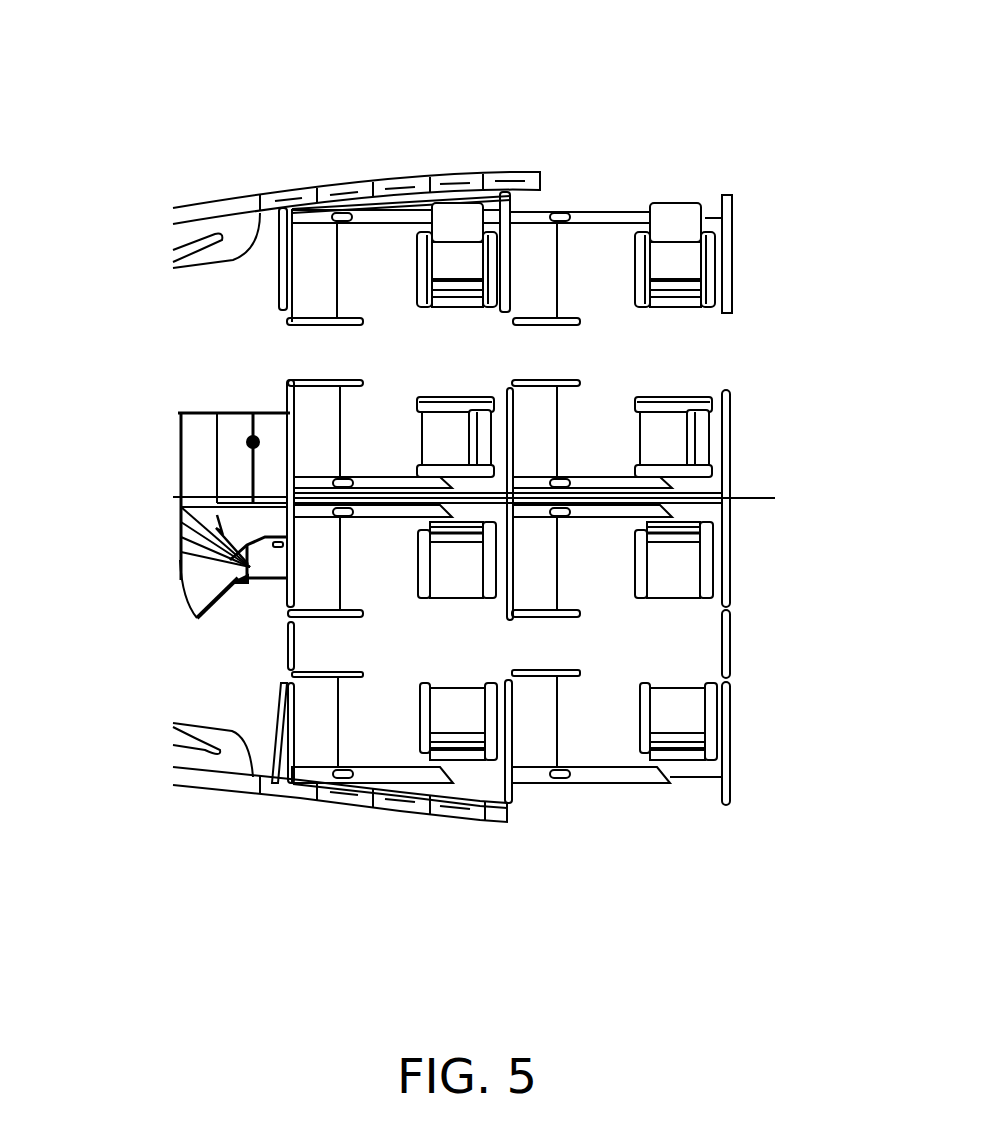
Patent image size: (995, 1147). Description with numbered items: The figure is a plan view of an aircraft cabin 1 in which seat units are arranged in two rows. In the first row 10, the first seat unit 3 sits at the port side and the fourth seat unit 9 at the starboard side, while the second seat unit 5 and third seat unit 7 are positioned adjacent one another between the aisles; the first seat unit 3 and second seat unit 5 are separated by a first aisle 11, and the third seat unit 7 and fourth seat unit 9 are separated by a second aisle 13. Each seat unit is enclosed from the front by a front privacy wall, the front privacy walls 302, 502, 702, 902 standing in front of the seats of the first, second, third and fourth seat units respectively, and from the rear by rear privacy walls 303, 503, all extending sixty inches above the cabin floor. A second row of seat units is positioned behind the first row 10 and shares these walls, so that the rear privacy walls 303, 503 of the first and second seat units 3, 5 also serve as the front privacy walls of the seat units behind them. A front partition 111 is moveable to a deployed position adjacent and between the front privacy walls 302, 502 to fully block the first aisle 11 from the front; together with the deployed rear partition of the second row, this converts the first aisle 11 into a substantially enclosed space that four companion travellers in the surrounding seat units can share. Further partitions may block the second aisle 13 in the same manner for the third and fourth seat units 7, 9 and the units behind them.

The aircraft cabin 1 is at (197, 158).
The front privacy wall 902 is at (287, 307).
The first row 10 is at (367, 160).
The second aisle 13 is at (478, 337).
The fourth seat unit 9 is at (303, 282).
The front privacy wall 702 is at (290, 440).
The third seat unit 7 is at (302, 458).
The second seat unit 5 is at (302, 555).
The front privacy wall 502 is at (287, 596).
The front partition 111 is at (287, 635).
The front privacy wall 302 is at (290, 742).
The first seat unit 3 is at (378, 743).
The rear privacy wall 503 is at (510, 575).
The first aisle 11 is at (602, 652).
The rear privacy wall 303 is at (507, 728).